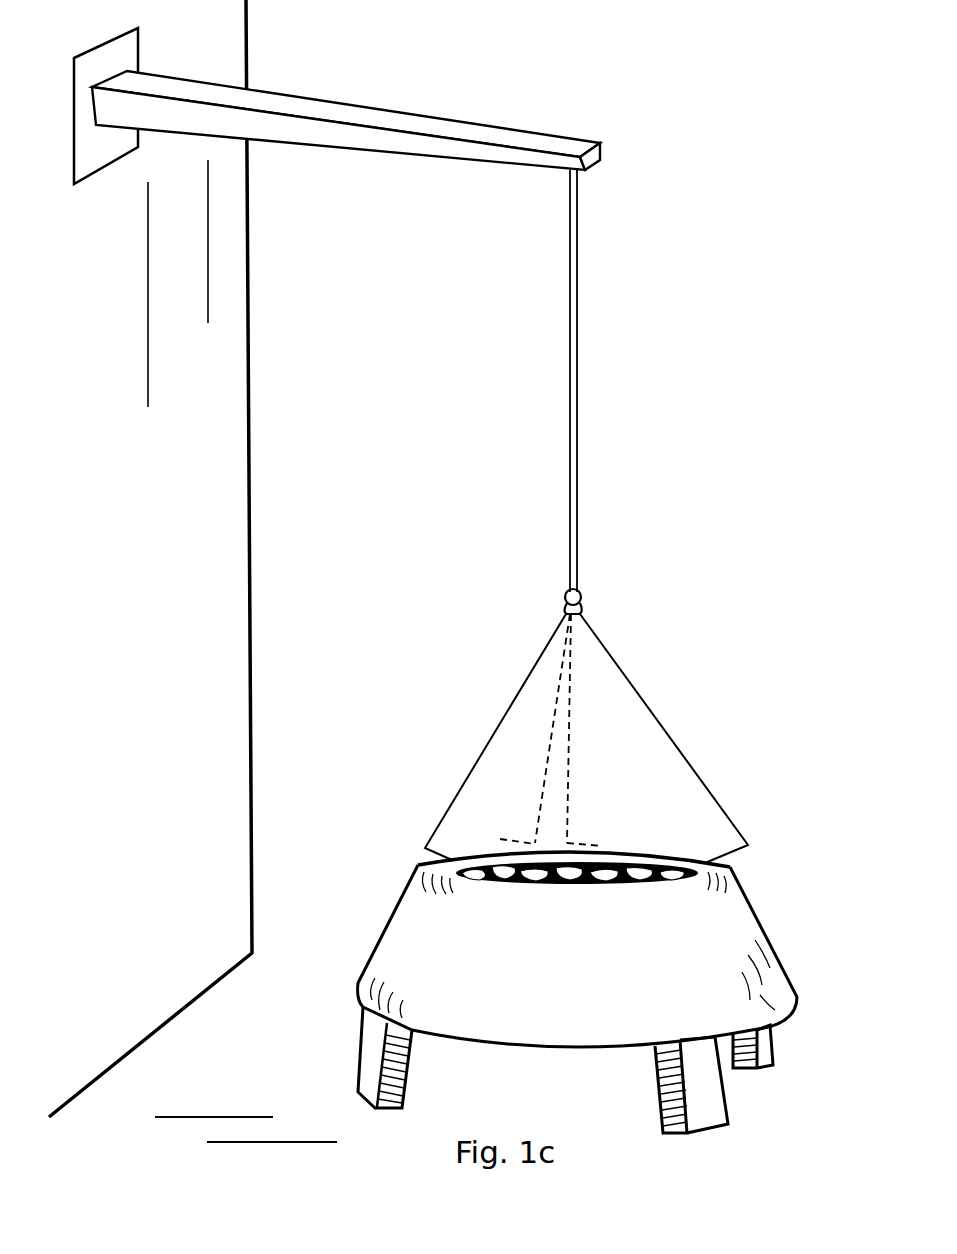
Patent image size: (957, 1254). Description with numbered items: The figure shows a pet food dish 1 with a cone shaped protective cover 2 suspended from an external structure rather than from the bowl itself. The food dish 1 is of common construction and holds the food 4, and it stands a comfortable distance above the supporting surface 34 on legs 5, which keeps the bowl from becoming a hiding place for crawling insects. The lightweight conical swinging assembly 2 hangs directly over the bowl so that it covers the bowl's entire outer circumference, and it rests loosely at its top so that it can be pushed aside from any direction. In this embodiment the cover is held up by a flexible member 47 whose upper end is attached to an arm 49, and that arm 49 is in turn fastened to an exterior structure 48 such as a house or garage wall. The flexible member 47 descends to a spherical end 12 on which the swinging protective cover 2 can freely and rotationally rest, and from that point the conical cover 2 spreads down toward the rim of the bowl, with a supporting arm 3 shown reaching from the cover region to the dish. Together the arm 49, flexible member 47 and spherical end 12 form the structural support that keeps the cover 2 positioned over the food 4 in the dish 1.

The food dish 1 is at (565, 983).
The protective cover 2 is at (513, 720).
The arm 3 is at (653, 768).
The food 4 is at (547, 885).
The legs 5 is at (728, 1087).
The spherical end 12 is at (578, 589).
The supporting surface 34 is at (327, 1128).
The cord 47 is at (577, 288).
The exterior structure 48 is at (211, 436).
The arm 49 is at (490, 130).